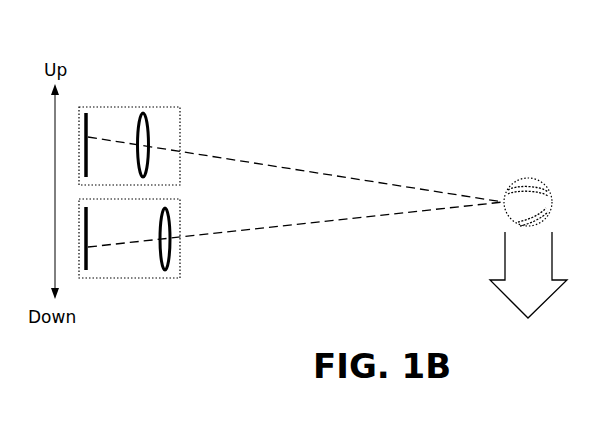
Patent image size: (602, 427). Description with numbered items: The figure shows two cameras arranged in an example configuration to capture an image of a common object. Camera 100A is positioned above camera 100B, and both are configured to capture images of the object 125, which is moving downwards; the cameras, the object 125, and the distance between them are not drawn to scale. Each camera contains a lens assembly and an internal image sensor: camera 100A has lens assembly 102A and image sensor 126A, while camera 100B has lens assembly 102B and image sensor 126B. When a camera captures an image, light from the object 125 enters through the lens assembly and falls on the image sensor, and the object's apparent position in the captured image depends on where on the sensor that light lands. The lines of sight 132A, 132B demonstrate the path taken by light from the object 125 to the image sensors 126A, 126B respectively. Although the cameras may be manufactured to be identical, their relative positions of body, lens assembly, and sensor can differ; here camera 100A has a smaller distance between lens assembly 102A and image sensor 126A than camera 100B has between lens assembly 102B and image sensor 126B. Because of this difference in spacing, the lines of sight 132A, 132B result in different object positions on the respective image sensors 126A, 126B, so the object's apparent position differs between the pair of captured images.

The camera 100A is at (165, 106).
The camera 100B is at (163, 279).
The lens assembly 102A is at (148, 136).
The lens assembly 102B is at (168, 263).
The image sensor 126A is at (149, 81).
The image sensor 126B is at (89, 264).
The line of sight 132A is at (335, 167).
The line of sight 132B is at (310, 224).
The object 125 is at (528, 174).